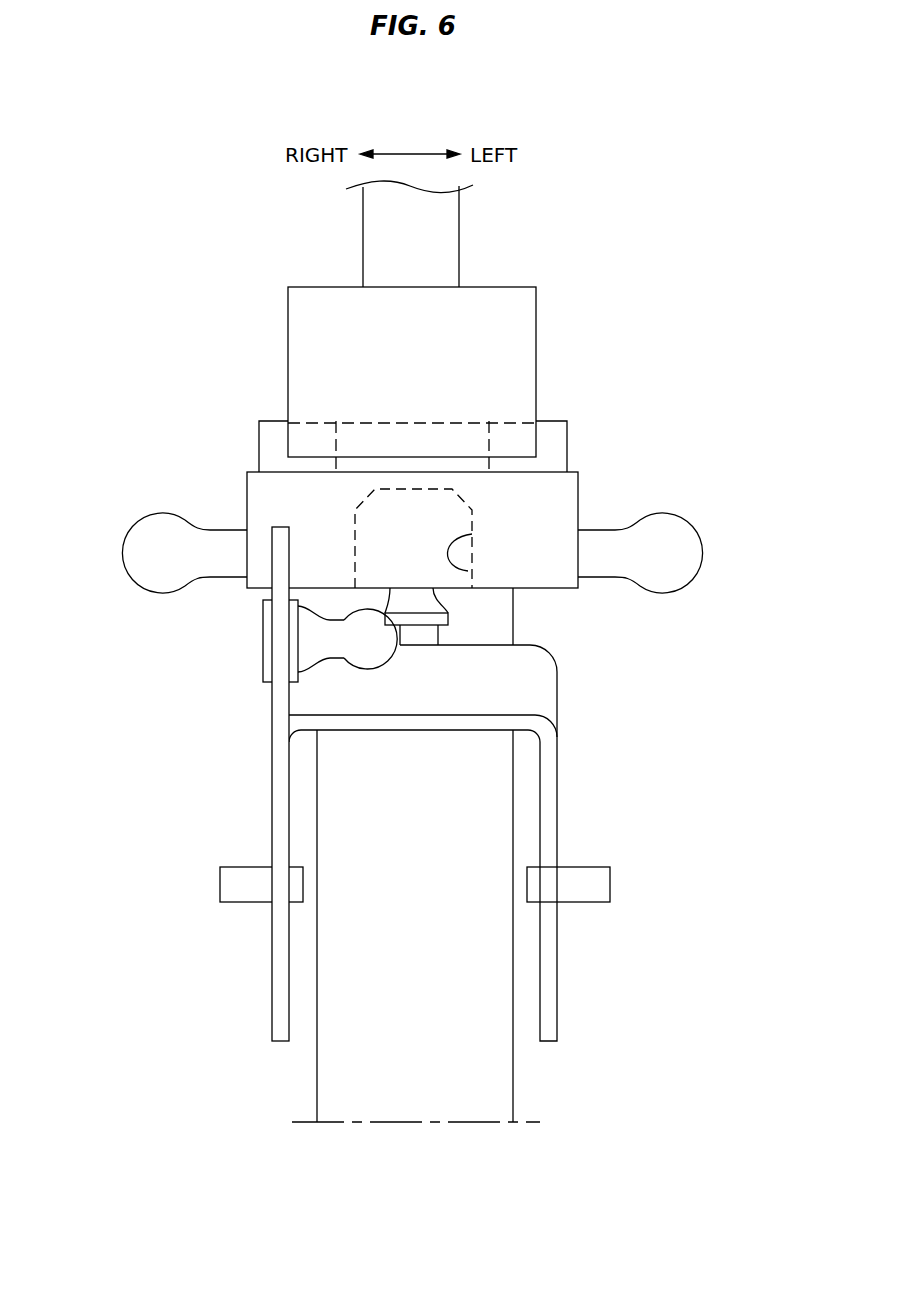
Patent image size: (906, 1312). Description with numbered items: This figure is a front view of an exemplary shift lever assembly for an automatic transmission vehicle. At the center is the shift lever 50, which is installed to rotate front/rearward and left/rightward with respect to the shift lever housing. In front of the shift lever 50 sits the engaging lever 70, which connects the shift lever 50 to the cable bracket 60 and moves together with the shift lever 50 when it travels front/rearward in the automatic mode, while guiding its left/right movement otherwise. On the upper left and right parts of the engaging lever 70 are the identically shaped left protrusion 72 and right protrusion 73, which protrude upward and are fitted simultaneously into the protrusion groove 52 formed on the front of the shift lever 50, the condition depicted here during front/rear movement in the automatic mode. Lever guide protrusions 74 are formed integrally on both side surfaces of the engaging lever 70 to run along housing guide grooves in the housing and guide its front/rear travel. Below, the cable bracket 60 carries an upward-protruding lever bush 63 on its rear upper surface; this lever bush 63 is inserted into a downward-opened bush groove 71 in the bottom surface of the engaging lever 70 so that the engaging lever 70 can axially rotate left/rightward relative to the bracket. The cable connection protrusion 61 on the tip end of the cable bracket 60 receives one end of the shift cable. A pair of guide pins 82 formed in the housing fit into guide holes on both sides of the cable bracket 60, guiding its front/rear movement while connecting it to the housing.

The shift lever 50 is at (298, 298).
The protrusion groove 52 is at (400, 423).
The cable bracket 60 is at (555, 806).
The cable connection protrusion 61 is at (371, 657).
The lever bush 63 is at (403, 526).
The engaging lever 70 is at (563, 497).
The bush groove 71 is at (468, 571).
The left protrusion 72 is at (557, 430).
The right protrusion 73 is at (267, 433).
The lever guide protrusion 74 is at (145, 554).
The guide pin 82 is at (233, 885).